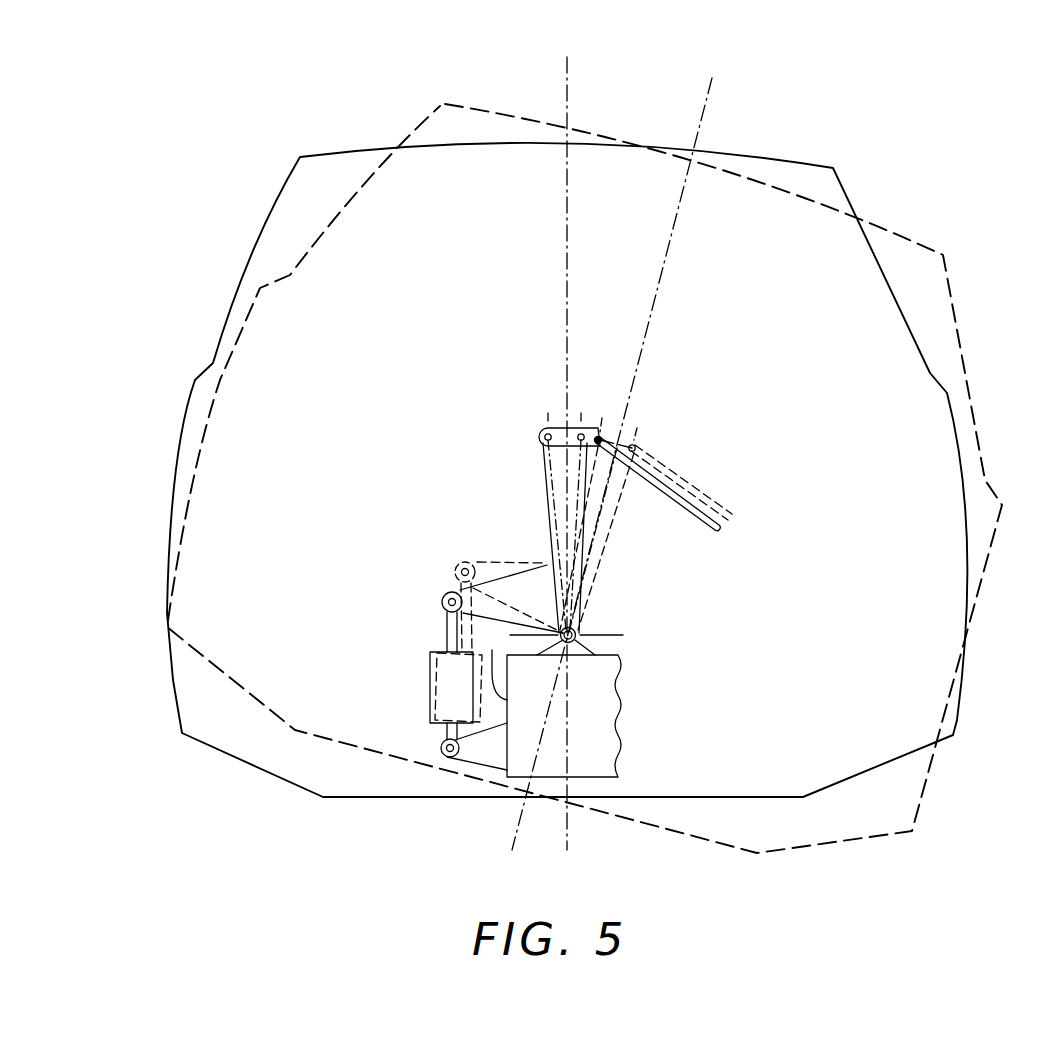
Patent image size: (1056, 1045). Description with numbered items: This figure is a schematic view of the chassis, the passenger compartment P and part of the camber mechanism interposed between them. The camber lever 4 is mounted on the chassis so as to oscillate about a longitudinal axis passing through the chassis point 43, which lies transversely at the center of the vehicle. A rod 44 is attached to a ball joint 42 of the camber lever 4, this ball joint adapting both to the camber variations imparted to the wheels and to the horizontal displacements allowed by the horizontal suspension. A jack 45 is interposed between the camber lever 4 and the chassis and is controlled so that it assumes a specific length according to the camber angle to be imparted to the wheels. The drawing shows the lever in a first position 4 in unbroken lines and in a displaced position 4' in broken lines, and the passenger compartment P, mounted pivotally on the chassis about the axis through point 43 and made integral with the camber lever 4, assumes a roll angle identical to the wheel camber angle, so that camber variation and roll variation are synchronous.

The passenger compartment P is at (900, 231).
The camber lever 4 is at (530, 532).
The arm in alternate position 4' is at (622, 539).
The ball joint 42 is at (588, 428).
The chassis point 43 is at (577, 632).
The rod 44 is at (675, 493).
The jack 45 is at (435, 690).